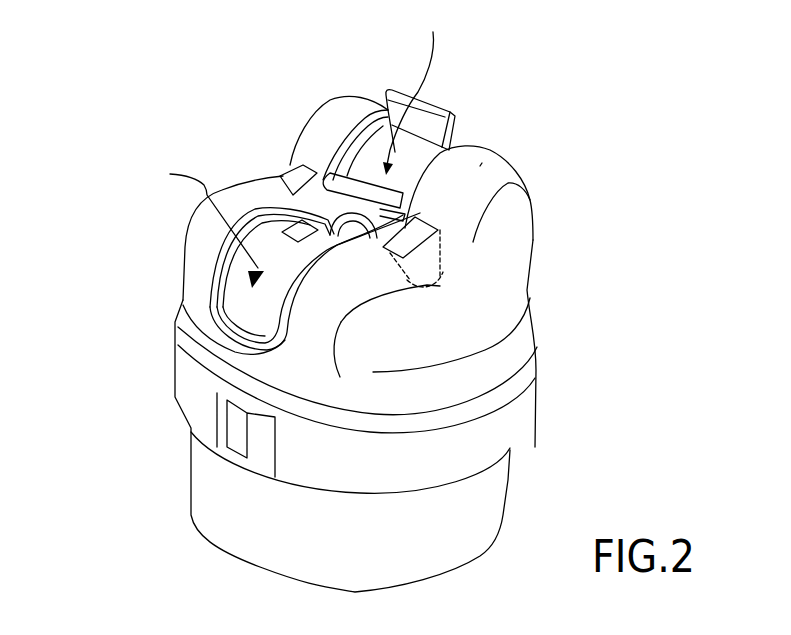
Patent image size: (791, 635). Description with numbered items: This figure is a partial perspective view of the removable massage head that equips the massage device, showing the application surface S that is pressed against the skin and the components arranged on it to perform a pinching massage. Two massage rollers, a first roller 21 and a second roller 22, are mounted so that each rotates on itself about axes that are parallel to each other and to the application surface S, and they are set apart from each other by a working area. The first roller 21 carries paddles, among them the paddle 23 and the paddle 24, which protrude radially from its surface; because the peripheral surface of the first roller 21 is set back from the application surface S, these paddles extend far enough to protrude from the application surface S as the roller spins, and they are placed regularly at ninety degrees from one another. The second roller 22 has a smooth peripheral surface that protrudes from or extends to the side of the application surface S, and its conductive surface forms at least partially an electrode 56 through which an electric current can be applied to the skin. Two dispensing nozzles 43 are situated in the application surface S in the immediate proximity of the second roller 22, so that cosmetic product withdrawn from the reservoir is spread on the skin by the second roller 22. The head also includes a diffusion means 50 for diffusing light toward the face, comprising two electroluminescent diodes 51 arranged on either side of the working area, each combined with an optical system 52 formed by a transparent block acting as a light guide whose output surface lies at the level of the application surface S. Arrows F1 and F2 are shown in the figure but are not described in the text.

The first roller 21 is at (380, 142).
The second roller 22 is at (240, 260).
The paddle 23 is at (451, 112).
The paddle 24 is at (329, 177).
The dispensing nozzle 43 is at (177, 344).
The diffusion means 50 is at (282, 167).
The electroluminescent diode 51 is at (440, 286).
The optical system 52 is at (290, 162).
The electrode 56 is at (292, 223).
The application surface S is at (483, 162).
The force F1 is at (415, 91).
The force F2 is at (204, 222).